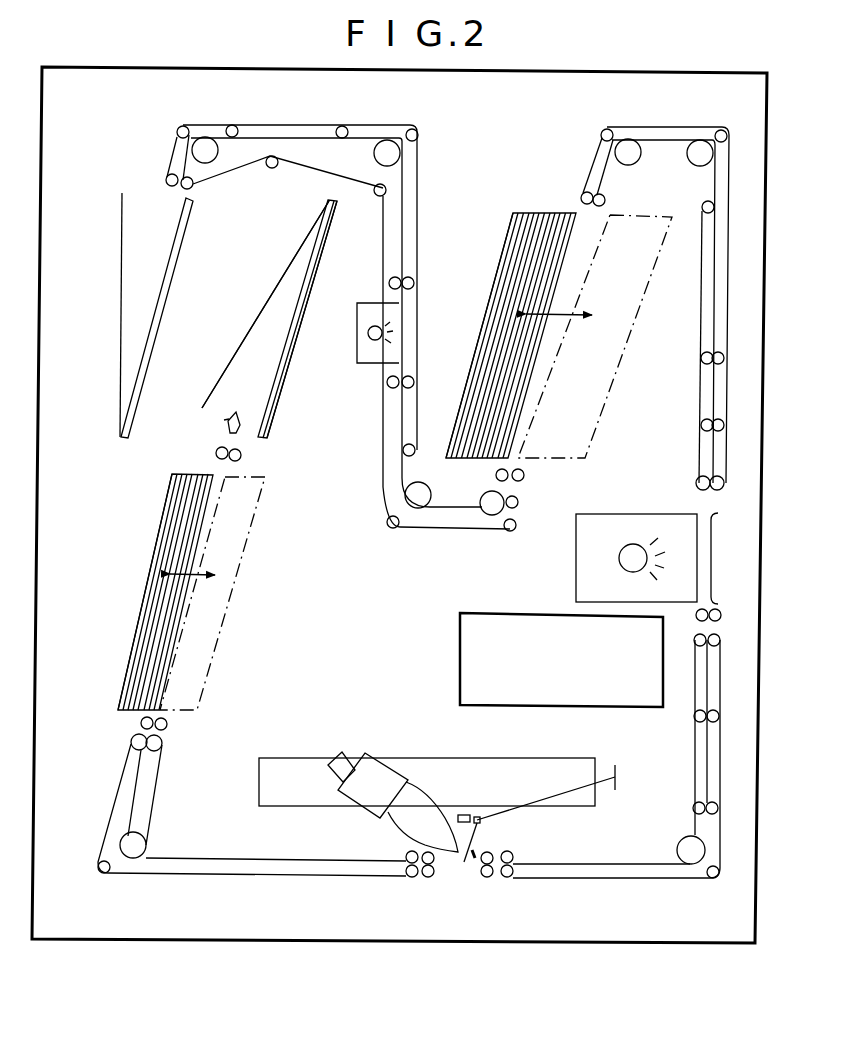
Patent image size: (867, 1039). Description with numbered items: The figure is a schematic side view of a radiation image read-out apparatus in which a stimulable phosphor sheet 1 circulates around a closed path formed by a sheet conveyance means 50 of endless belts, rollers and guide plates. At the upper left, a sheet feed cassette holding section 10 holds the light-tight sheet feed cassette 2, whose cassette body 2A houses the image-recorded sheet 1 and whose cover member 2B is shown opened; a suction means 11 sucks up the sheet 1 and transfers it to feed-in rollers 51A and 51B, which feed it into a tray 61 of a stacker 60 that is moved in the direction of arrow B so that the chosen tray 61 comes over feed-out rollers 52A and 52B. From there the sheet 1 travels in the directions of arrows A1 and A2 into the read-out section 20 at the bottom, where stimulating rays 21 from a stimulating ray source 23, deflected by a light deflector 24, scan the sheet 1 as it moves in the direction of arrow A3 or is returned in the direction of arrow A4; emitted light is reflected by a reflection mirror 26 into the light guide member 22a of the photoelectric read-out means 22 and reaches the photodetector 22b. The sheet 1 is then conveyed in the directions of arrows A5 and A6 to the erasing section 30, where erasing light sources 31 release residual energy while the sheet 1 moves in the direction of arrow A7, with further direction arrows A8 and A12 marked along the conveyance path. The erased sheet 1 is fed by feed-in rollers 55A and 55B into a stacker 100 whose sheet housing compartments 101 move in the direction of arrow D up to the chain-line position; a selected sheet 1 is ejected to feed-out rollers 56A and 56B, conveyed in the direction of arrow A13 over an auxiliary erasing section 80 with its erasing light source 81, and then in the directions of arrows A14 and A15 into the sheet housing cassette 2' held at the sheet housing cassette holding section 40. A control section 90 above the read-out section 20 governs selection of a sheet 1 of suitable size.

The stimulable phosphor sheet 1 is at (283, 377).
The sheet feed cassette 2 is at (299, 319).
The sheet housing cassette 2' is at (93, 315).
The cassette body 2A is at (315, 285).
The cover member 2B is at (231, 360).
The sheet feed cassette holding section 10 is at (268, 270).
The suction means 11 is at (236, 412).
The read-out section 20 is at (437, 769).
The stimulating rays 21 is at (538, 808).
The photoelectric read-out means 22 is at (364, 789).
The light guide member 22a is at (413, 823).
The photodetector 22b is at (362, 770).
The stimulating ray source 23 is at (465, 762).
The light deflector 24 is at (465, 813).
The reflection mirror 26 is at (486, 846).
The erasing section 30 is at (625, 487).
The erasing light source 31 is at (619, 556).
The sheet housing cassette holding section 40 is at (112, 262).
The sheet conveyance means 50 is at (305, 110).
The feed-in roller 51A is at (216, 453).
The feed-in roller 51B is at (241, 456).
The feed-out roller 52A is at (141, 723).
The feed-out roller 52B is at (167, 725).
The feed-in roller 55A is at (581, 197).
The feed-in roller 55B is at (605, 199).
The feed-out roller 56A is at (496, 475).
The feed-out roller 56B is at (524, 475).
The stacker 60 is at (138, 562).
The tray 61 is at (128, 641).
The auxiliary erasing section 80 is at (375, 374).
The erasing light source 81 is at (357, 334).
The control section 90 is at (511, 625).
The stacker 100 is at (520, 192).
The sheet housing compartment 101 is at (503, 235).
The arrow A1 is at (148, 762).
The arrow A2 is at (228, 868).
The arrow A3 is at (442, 866).
The arrow A4 is at (437, 879).
The arrow A5 is at (592, 871).
The arrow A6 is at (713, 665).
The arrow A7 is at (718, 586).
The direction arrow A8 is at (718, 380).
The direction arrow A12 is at (170, 212).
The arrow A13 is at (410, 513).
The arrow A14 is at (395, 210).
The arrow A15 is at (184, 150).
The arrow B is at (193, 575).
The arrow D is at (587, 312).